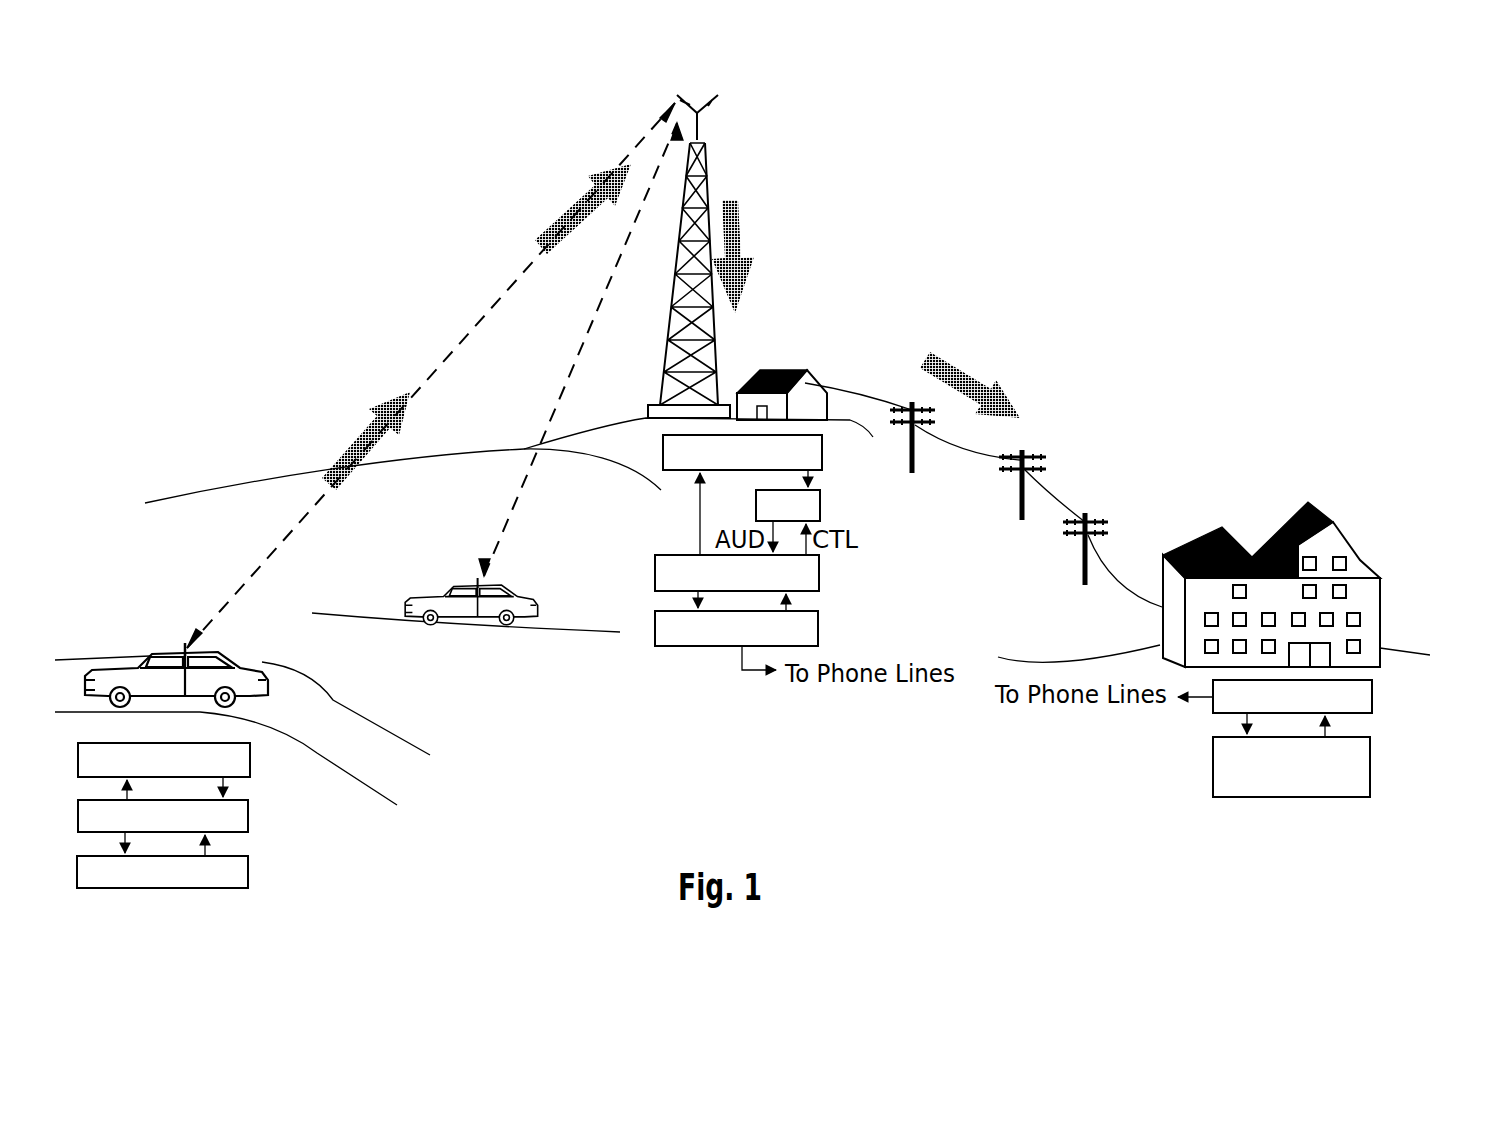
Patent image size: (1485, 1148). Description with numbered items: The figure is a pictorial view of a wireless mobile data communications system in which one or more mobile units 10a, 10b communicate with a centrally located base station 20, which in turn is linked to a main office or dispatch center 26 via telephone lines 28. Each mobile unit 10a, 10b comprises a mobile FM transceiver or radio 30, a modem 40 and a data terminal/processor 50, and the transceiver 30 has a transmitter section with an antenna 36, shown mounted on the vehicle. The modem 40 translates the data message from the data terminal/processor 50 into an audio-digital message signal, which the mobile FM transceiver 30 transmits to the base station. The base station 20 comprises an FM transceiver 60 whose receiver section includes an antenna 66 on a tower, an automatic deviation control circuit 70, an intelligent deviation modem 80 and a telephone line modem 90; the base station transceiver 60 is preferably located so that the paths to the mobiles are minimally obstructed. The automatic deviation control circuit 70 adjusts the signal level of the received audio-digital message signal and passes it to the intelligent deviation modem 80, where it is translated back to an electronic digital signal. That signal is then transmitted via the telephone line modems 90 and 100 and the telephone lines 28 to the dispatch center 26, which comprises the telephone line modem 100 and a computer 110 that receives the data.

The antenna 66 is at (712, 112).
The base station 20 is at (773, 368).
The telephone lines 28 is at (1050, 505).
The main office or dispatch center 26 is at (1230, 522).
The antenna 36 is at (182, 652).
The mobile unit 10a is at (237, 662).
The mobile unit 10b is at (462, 630).
The mobile FM transceiver 30 is at (250, 760).
The modem 40 is at (248, 815).
The data terminal/processor 50 is at (248, 872).
The base station FM transceiver 60 is at (822, 452).
The automatic deviation control circuit 70 is at (820, 507).
The intelligent deviation modem 80 is at (819, 573).
The telephone line modem 90 is at (818, 630).
The telephone line modem 100 is at (1372, 695).
The computer 110 is at (1370, 758).